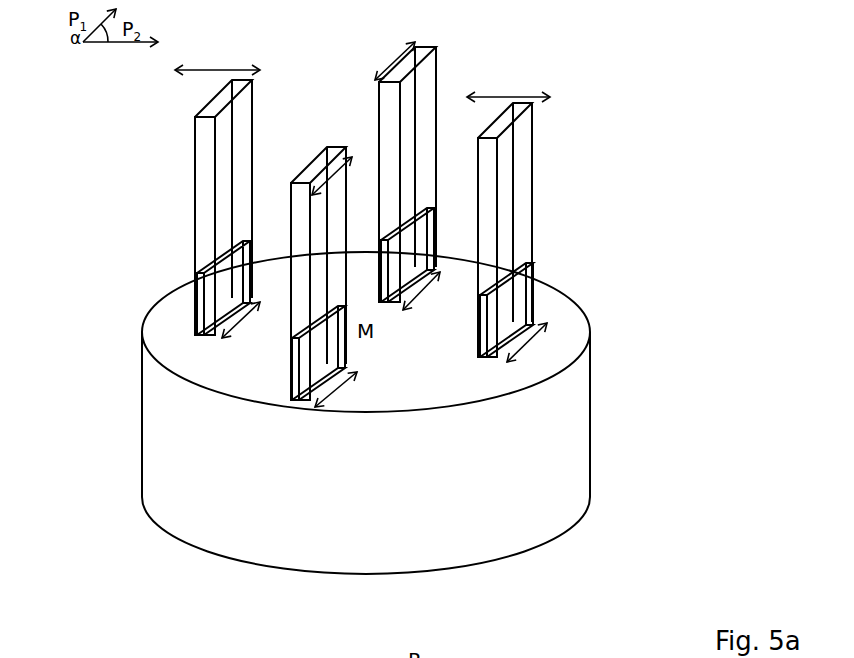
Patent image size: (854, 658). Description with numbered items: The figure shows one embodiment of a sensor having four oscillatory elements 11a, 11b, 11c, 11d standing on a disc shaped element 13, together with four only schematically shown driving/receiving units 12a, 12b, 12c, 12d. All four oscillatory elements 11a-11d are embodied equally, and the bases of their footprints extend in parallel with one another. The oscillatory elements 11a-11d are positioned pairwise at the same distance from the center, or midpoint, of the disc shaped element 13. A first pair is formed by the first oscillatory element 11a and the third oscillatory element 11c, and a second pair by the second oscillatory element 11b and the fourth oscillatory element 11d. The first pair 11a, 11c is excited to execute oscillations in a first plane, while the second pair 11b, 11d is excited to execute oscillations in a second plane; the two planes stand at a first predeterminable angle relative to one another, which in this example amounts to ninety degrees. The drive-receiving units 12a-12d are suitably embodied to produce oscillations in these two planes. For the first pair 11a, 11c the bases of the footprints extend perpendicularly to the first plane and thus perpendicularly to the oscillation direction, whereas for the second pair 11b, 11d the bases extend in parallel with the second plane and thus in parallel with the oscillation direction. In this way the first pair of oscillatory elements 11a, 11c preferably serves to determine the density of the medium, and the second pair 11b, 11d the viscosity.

The first oscillatory element 11a is at (188, 138).
The second oscillatory element 11b is at (377, 70).
The third oscillatory element 11c is at (510, 93).
The fourth oscillatory element 11d is at (297, 208).
The driving/receiving unit 12a is at (205, 282).
The driving/receiving unit 12b is at (404, 257).
The driving/receiving unit 12c is at (519, 298).
The driving/receiving unit 12d is at (297, 373).
The disc shaped element 13 is at (183, 510).